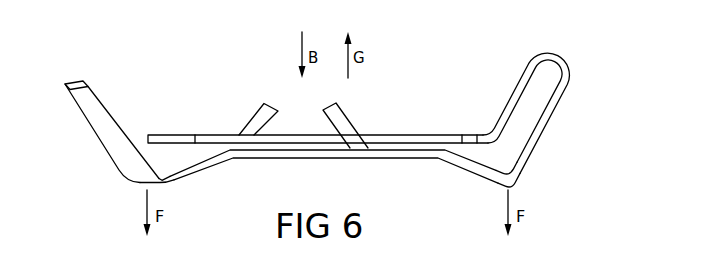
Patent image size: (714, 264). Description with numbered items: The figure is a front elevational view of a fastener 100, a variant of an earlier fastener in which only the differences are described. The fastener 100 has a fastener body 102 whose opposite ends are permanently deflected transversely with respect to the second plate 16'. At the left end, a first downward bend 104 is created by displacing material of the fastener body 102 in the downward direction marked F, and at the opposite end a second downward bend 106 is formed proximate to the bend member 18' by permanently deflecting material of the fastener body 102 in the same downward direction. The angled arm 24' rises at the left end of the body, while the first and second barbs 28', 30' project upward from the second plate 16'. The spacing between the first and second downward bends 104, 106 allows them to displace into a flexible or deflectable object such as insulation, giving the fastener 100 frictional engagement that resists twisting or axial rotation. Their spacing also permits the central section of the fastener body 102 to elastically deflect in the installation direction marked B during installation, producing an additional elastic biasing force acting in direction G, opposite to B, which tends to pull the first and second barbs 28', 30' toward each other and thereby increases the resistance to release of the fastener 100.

The fastener 100 is at (472, 84).
The second plate 16' is at (318, 123).
The bend member 18' is at (551, 103).
The angled end arm 24' is at (112, 128).
The first barb 28' is at (337, 113).
The second barb 30' is at (252, 120).
The fastener body 102 is at (328, 157).
The first downward bend 104 is at (167, 179).
The second downward bend 106 is at (515, 177).